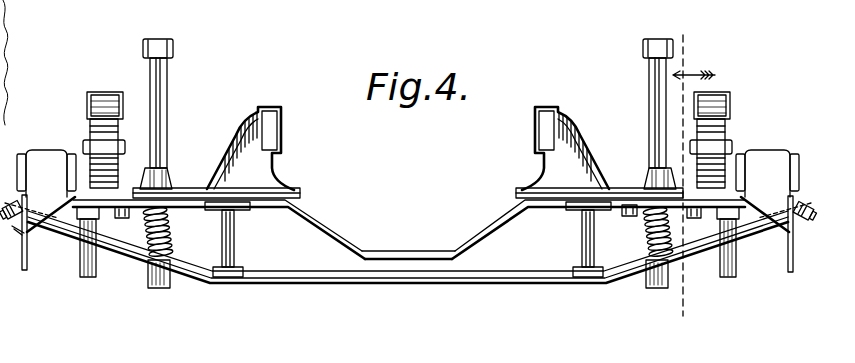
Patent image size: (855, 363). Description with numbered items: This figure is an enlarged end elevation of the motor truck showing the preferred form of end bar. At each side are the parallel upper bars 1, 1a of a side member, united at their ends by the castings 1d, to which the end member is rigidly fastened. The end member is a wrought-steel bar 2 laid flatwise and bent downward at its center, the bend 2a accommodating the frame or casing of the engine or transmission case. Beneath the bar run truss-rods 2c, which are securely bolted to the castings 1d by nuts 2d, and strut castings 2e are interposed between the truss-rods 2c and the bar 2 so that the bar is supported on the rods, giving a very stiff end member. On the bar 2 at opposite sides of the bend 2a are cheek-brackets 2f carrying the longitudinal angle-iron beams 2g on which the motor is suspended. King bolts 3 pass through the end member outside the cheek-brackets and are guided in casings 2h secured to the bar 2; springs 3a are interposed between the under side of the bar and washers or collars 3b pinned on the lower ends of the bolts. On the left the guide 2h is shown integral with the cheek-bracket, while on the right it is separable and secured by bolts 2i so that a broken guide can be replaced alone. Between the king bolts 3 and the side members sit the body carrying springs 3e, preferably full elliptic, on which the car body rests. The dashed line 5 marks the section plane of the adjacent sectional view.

The upper bar 1 is at (25, 172).
The upper bar 1a is at (752, 138).
The end casting 1d is at (780, 138).
The end bar 2 is at (537, 200).
The central downward bend 2a is at (826, 213).
The truss-rod 2c is at (418, 285).
The nut 2d is at (14, 213).
The strut casting 2e is at (234, 248).
The cheek-bracket 2f is at (597, 116).
The angle-iron beam 2g is at (282, 127).
The casing 2h is at (166, 186).
The bolt 2i is at (630, 216).
The king bolt 3 is at (168, 76).
The spring 3a is at (646, 238).
The washer or collar 3b is at (716, 299).
The body carrying spring 3e is at (752, 88).
The section line 5 is at (694, 177).